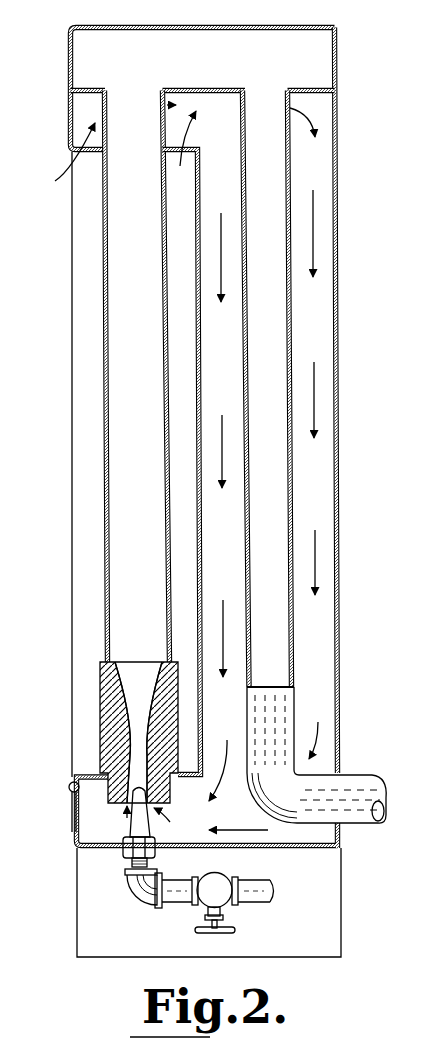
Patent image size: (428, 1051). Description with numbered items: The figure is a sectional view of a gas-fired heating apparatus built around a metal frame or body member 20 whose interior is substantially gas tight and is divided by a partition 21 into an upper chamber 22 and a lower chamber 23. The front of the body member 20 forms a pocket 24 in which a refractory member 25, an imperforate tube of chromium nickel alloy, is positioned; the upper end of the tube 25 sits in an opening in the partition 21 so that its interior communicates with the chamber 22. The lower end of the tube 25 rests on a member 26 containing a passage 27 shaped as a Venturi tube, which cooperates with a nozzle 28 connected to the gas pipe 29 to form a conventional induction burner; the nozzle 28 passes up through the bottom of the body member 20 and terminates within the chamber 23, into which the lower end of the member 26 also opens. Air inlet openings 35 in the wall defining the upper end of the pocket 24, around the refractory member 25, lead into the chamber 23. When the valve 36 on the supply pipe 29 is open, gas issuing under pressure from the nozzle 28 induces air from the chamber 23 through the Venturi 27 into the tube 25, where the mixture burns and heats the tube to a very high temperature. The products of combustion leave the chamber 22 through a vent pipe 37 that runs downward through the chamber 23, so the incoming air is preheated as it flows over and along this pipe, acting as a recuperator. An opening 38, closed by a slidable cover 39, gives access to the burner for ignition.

The frame or body member 20 is at (338, 521).
The partition 21 is at (192, 89).
The chamber 22 is at (310, 62).
The chamber 23 is at (313, 482).
The pocket 24 is at (97, 579).
The refractory member 25 is at (106, 414).
The member 26 is at (113, 737).
The passage 27 is at (138, 710).
The nozzle 28 is at (142, 822).
The gas pipe 29 is at (182, 893).
The air inlet openings 35 is at (87, 154).
The valve 36 is at (218, 898).
The vent pipe 37 is at (291, 329).
The opening 38 is at (78, 820).
The slidable cover 39 is at (70, 816).